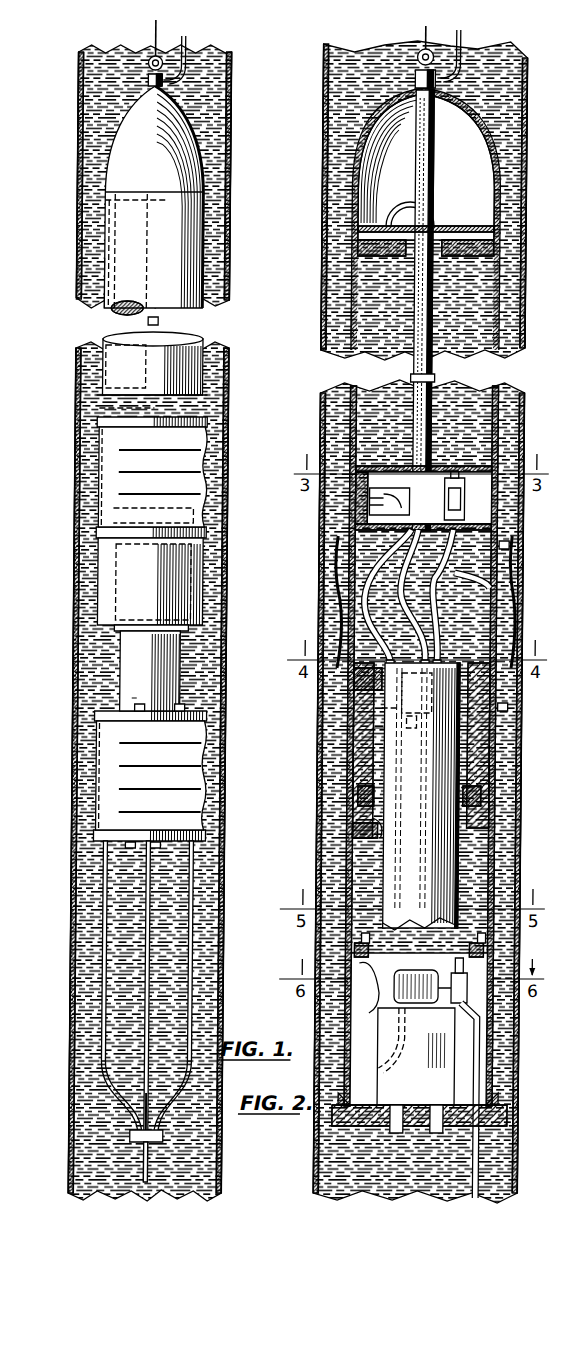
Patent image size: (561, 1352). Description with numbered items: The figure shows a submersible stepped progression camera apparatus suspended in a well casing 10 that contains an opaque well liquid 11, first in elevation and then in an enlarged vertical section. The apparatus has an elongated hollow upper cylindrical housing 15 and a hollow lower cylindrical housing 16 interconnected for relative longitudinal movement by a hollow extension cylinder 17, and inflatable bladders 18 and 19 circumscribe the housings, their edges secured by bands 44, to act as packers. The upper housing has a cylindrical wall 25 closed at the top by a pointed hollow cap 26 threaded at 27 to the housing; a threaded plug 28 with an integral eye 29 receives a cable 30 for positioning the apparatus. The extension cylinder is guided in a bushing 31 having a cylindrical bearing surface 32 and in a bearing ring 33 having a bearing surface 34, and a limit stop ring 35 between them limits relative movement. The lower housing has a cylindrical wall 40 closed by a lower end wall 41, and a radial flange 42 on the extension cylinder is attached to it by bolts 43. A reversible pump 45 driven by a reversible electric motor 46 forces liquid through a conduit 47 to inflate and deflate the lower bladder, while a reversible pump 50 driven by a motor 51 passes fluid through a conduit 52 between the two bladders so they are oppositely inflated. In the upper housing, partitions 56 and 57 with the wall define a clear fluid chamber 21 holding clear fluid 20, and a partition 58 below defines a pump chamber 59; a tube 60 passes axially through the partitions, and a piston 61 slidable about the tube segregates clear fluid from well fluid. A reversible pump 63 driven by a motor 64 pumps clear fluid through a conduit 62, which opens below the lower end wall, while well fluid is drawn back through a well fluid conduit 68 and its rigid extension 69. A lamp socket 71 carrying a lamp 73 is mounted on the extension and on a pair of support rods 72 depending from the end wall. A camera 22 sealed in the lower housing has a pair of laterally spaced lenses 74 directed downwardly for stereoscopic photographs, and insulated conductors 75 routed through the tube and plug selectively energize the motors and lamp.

In FIG. 1, the well casing 10 is at (72, 100).
In FIG. 2, the well casing 10 is at (521, 62).
In FIG. 1, the well liquid 11 is at (92, 68).
In FIG. 2, the well liquid 11 is at (524, 68).
In FIG. 1, the upper cylindrical housing 15 is at (98, 226).
In FIG. 2, the upper cylindrical housing 15 is at (340, 282).
In FIG. 1, the lower cylindrical housing 16 is at (90, 744).
In FIG. 2, the lower cylindrical housing 16 is at (497, 1048).
In FIG. 1, the extension cylinder 17 is at (120, 650).
In FIG. 2, the extension cylinder 17 is at (458, 855).
In FIG. 1, the upper inflatable bladder 18 is at (100, 456).
In FIG. 2, the upper inflatable bladder 18 is at (335, 553).
In FIG. 1, the lower inflatable bladder 19 is at (100, 780).
In FIG. 2, the lower inflatable bladder 19 is at (505, 1010).
In FIG. 2, the clear fluid 20 is at (480, 270).
In FIG. 1, the clear fluid chamber 21 is at (106, 298).
In FIG. 2, the clear fluid chamber 21 is at (470, 300).
In FIG. 2, the camera 22 is at (426, 1077).
In FIG. 1, the cylindrical wall 25 is at (103, 258).
In FIG. 2, the cylindrical wall 25 is at (338, 310).
In FIG. 1, the hollow cap 26 is at (101, 143).
In FIG. 2, the hollow cap 26 is at (348, 133).
In FIG. 2, the threaded connection 27 is at (350, 207).
In FIG. 1, the threaded plug 28 is at (147, 82).
In FIG. 2, the threaded plug 28 is at (418, 82).
In FIG. 1, the eye 29 is at (146, 48).
In FIG. 2, the eye 29 is at (410, 49).
In FIG. 1, the cable 30 is at (149, 18).
In FIG. 2, the cable 30 is at (416, 25).
In FIG. 1, the bushing 31 is at (112, 620).
In FIG. 2, the bushing 31 is at (360, 820).
In FIG. 2, the cylindrical bearing surface 32 is at (365, 835).
In FIG. 1, the bearing ring 33 is at (105, 506).
In FIG. 2, the bearing ring 33 is at (352, 688).
In FIG. 2, the bearing surface 34 is at (380, 700).
In FIG. 2, the limit stop ring 35 is at (357, 790).
In FIG. 2, the cylindrical wall 40 is at (352, 1000).
In FIG. 2, the lower end wall 41 is at (360, 1118).
In FIG. 1, the radial flange 42 is at (100, 690).
In FIG. 2, the radial flange 42 is at (378, 975).
In FIG. 1, the bolts 43 is at (133, 700).
In FIG. 2, the bolts 43 is at (355, 935).
In FIG. 1, the bands 44 is at (93, 826).
In FIG. 2, the bands 44 is at (500, 1103).
In FIG. 2, the reversible pump 45 is at (455, 995).
In FIG. 2, the reversible electric motor 46 is at (430, 962).
In FIG. 2, the conduit 47 is at (445, 1030).
In FIG. 2, the reversible pump 50 is at (405, 750).
In FIG. 2, the reversible electric motor 51 is at (375, 722).
In FIG. 2, the conduit 52 is at (366, 990).
In FIG. 1, the partition 56 is at (112, 184).
In FIG. 2, the partition 56 is at (436, 218).
In FIG. 1, the partition 57 is at (108, 350).
In FIG. 2, the partition 57 is at (352, 460).
In FIG. 1, the partition 58 is at (100, 400).
In FIG. 2, the partition 58 is at (352, 518).
In FIG. 1, the pump chamber 59 is at (80, 366).
In FIG. 2, the pump chamber 59 is at (489, 519).
In FIG. 1, the tube 60 is at (143, 314).
In FIG. 2, the tube 60 is at (402, 370).
In FIG. 2, the piston 61 is at (350, 240).
In FIG. 2, the clear fluid conduit 62 is at (370, 1060).
In FIG. 2, the reversible pump 63 is at (461, 490).
In FIG. 2, the reversible electric motor 64 is at (366, 493).
In FIG. 2, the well fluid conduit 68 is at (400, 196).
In FIG. 2, the well fluid conduit extension 69 is at (476, 1186).
In FIG. 1, the lamp socket 71 is at (132, 1128).
In FIG. 1, the support rods 72 is at (193, 942).
In FIG. 1, the lamp 73 is at (138, 1100).
In FIG. 1, the lenses 74 is at (150, 838).
In FIG. 2, the lenses 74 is at (438, 1125).
In FIG. 1, the insulated conductors 75 is at (185, 46).
In FIG. 2, the insulated conductors 75 is at (360, 595).